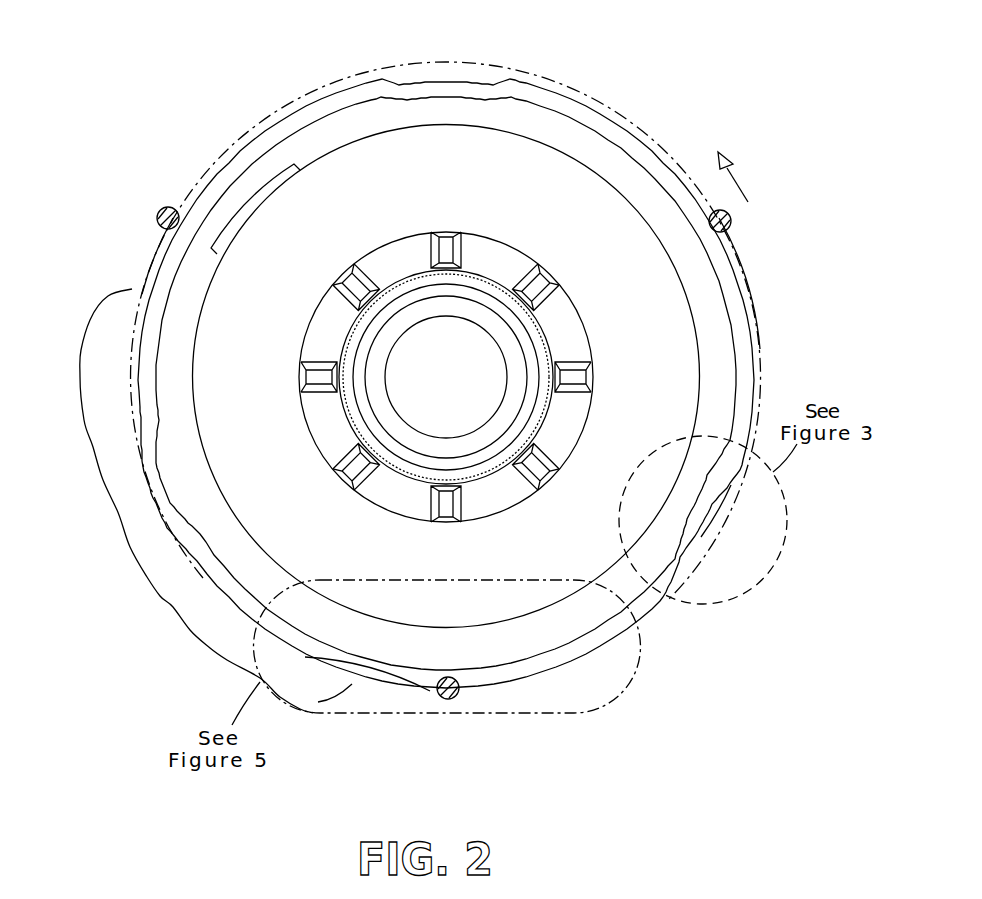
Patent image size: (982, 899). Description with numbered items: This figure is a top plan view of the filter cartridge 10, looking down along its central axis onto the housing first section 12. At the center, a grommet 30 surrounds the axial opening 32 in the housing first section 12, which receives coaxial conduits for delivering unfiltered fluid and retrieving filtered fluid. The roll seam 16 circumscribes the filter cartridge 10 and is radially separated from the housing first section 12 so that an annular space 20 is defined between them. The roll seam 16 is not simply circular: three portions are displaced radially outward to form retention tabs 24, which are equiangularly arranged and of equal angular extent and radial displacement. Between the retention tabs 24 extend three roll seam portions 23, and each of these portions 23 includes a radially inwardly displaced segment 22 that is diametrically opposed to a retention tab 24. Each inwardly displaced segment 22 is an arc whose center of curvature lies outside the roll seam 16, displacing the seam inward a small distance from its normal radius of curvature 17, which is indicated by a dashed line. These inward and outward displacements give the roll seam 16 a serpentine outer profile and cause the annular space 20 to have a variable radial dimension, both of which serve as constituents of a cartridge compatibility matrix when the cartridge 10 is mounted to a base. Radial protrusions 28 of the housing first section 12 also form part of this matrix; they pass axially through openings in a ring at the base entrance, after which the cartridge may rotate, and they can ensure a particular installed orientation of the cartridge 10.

The filter cartridge 10 is at (598, 55).
The housing first section 12 is at (570, 213).
The roll seam 16 is at (126, 347).
The normal radius of curvature 17 is at (723, 511).
The annular space 20 is at (335, 128).
The inwardly displaced segment 22 is at (436, 80).
The roll seam portion 23 is at (180, 612).
The retention tab 24 is at (170, 207).
The radial protrusion 28 is at (265, 188).
The grommet 30 is at (570, 423).
The axial opening 32 is at (400, 398).